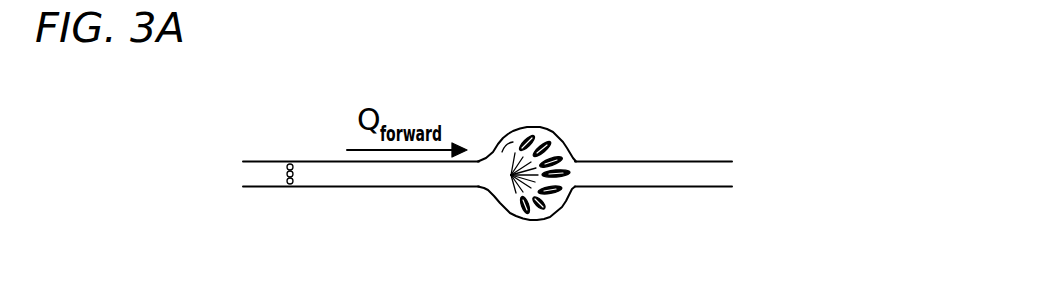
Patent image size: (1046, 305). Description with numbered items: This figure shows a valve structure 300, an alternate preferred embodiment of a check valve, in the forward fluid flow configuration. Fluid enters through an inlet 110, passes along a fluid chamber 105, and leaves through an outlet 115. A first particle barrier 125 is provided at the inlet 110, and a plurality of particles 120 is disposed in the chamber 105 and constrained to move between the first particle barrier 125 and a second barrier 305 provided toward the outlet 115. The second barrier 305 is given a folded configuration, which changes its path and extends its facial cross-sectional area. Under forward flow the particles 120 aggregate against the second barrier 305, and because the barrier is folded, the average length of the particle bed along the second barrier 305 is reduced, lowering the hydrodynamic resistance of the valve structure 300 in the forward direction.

The fluid chamber 105 is at (454, 206).
The inlet 110 is at (247, 170).
The outlet 115 is at (648, 173).
The particles 120 is at (511, 175).
The first particle barrier 125 is at (287, 188).
The valve structure 300 is at (576, 93).
The second barrier 305 is at (565, 175).